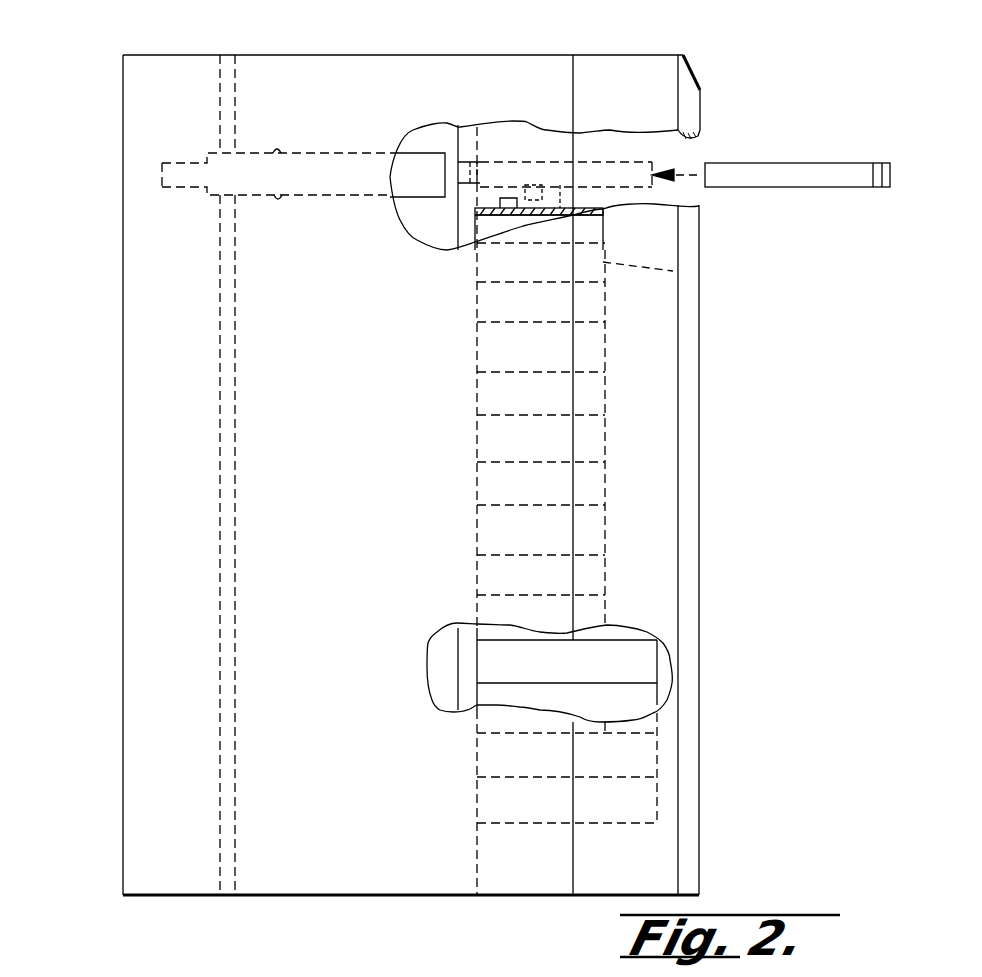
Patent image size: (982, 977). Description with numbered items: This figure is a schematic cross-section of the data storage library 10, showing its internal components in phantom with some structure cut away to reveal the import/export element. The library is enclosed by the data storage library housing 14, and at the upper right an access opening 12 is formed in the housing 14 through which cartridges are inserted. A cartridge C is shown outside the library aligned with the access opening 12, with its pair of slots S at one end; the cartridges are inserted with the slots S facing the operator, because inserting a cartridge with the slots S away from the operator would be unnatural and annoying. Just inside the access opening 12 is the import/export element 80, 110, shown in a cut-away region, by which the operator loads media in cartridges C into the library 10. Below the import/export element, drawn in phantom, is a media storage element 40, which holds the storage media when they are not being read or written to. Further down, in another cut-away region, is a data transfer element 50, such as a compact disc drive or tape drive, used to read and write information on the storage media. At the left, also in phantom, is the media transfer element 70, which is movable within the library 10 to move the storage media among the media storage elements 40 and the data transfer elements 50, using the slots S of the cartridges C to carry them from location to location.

The data storage library 10 is at (88, 150).
The access opening 12 is at (700, 133).
The data storage library housing 14 is at (660, 55).
The media storage element 40 is at (560, 213).
The data transfer element 50 is at (640, 765).
The media transfer element 70 is at (300, 170).
The import/export element 80 is at (545, 367).
The import/export element 110 is at (515, 207).
The cartridge C is at (763, 163).
The slot S is at (882, 163).